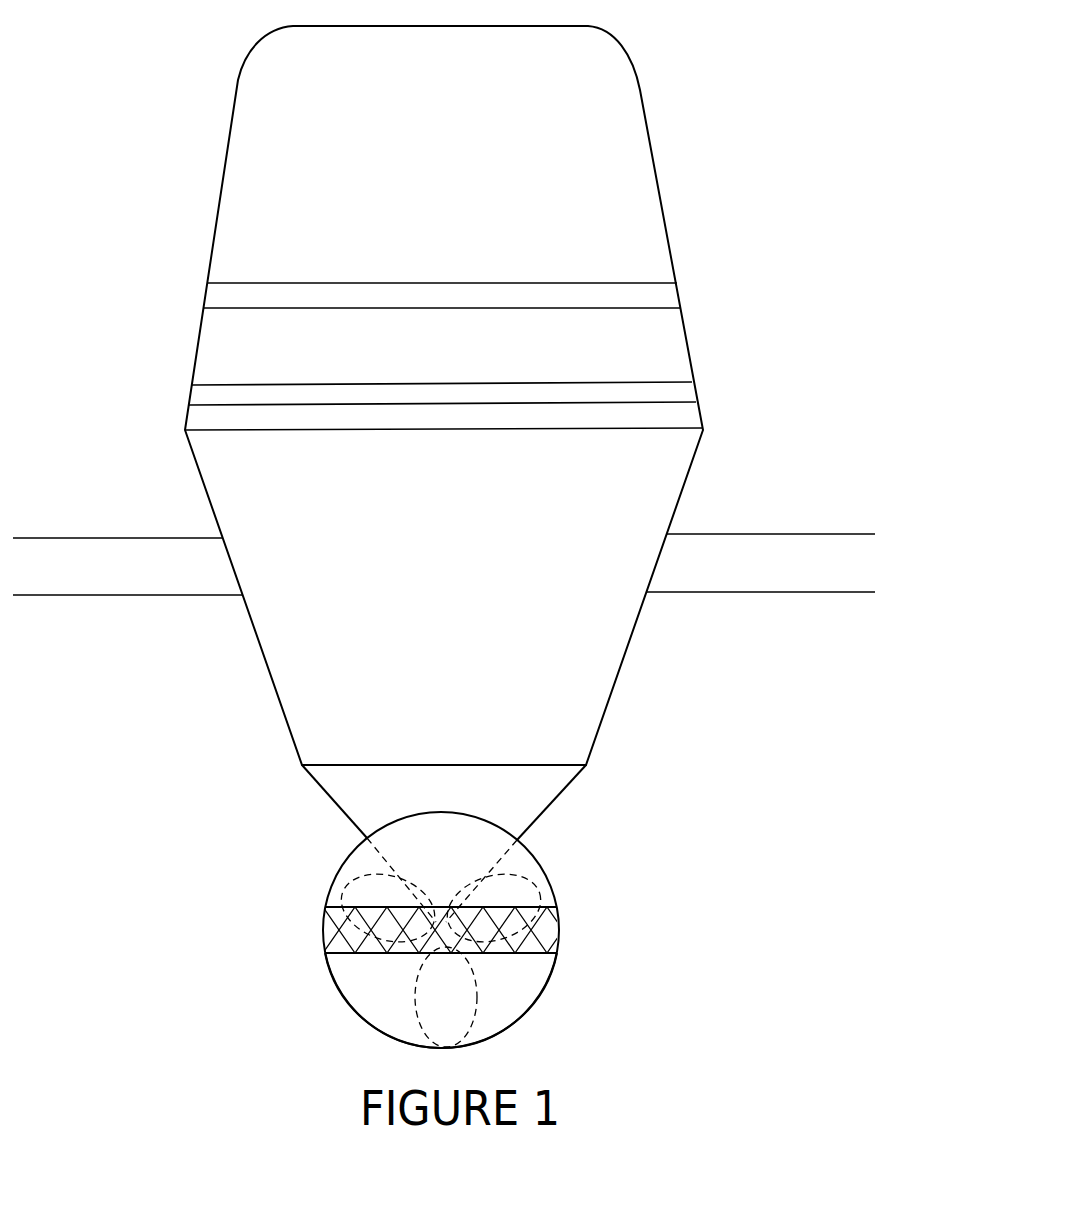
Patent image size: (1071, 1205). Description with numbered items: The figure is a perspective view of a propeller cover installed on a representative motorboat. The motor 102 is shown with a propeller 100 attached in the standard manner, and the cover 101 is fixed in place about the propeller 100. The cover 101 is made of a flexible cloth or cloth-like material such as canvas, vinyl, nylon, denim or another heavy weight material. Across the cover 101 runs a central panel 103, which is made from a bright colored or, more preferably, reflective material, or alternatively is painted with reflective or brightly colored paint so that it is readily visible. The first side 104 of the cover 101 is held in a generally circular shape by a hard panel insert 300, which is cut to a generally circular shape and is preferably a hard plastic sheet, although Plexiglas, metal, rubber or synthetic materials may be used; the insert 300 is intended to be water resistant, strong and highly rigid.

The motor 102 is at (578, 713).
The cover 101 is at (533, 850).
The propeller 100 is at (517, 892).
The central panel 103 is at (543, 930).
The hard panel insert 300 is at (555, 973).
The first side 104 is at (518, 998).